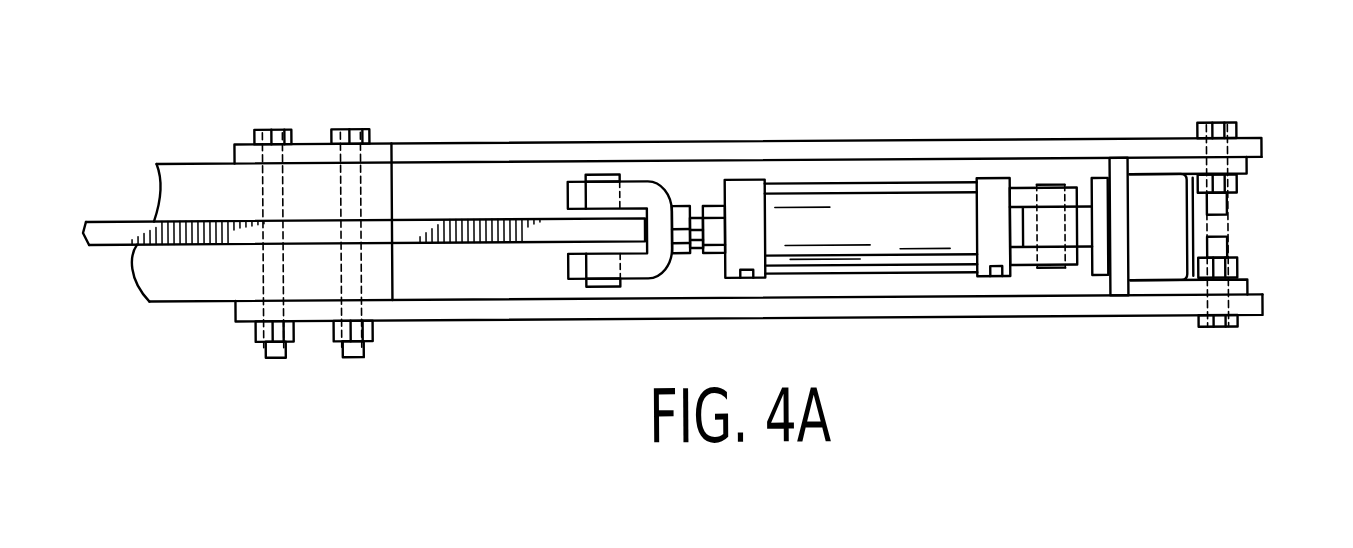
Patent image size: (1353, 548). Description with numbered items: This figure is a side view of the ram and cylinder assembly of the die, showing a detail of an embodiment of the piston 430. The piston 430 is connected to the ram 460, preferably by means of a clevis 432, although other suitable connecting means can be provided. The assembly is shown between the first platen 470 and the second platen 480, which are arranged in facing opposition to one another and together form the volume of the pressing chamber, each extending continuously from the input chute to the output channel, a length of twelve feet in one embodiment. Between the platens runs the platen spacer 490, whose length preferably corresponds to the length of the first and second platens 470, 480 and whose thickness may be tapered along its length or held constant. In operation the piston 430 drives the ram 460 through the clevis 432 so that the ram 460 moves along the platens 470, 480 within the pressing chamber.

The piston 430 is at (898, 194).
The clevis 432 is at (644, 191).
The ram 460 is at (427, 219).
The first platen 470 is at (213, 170).
The second platen 480 is at (180, 284).
The platen spacer 490 is at (192, 218).